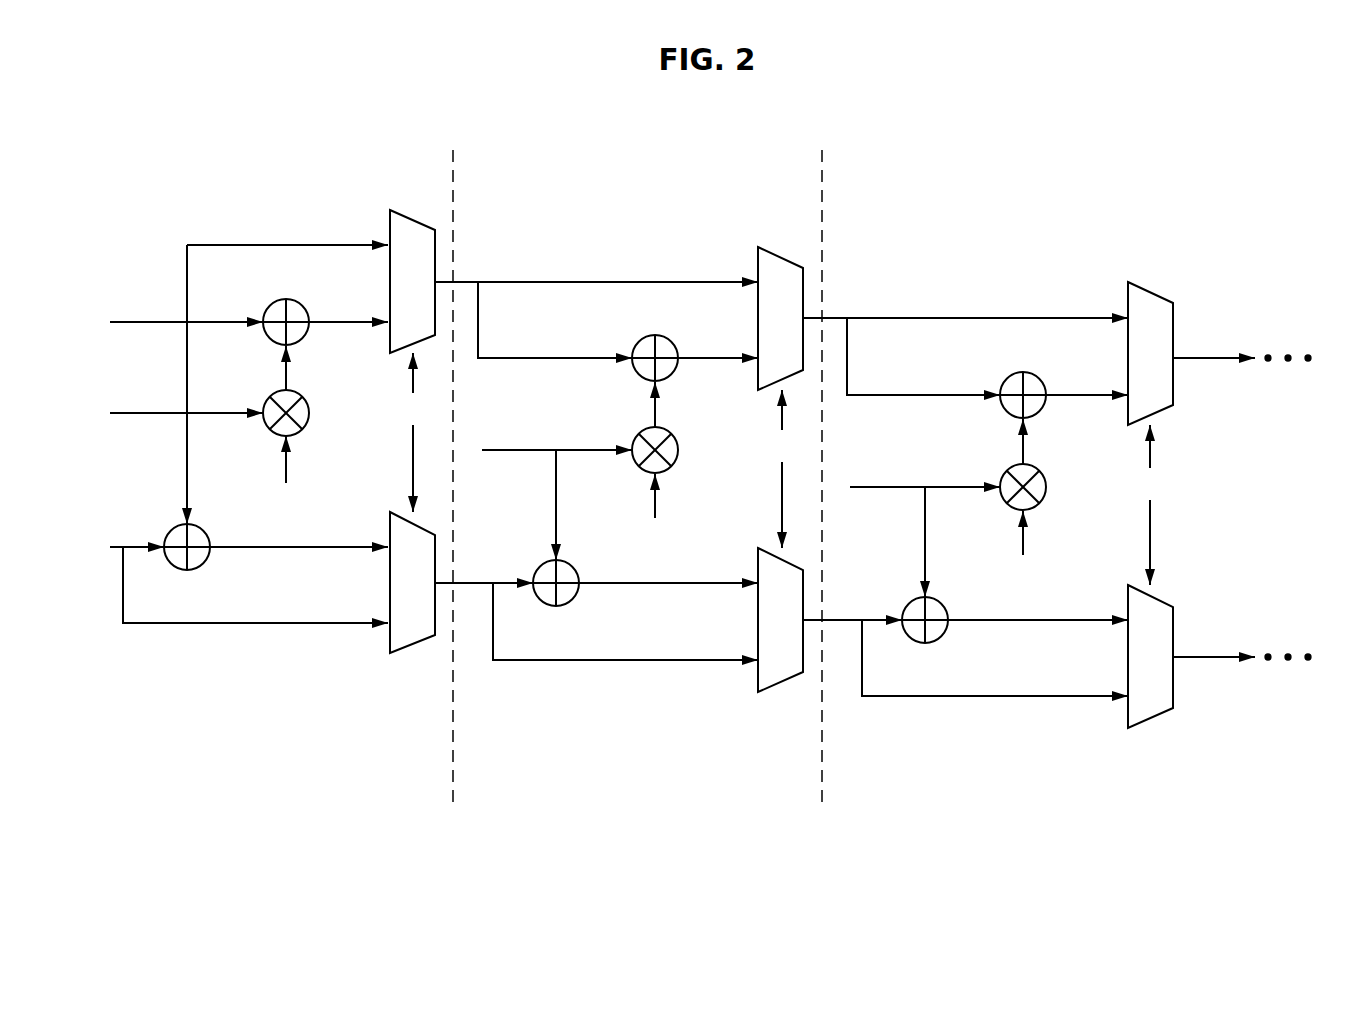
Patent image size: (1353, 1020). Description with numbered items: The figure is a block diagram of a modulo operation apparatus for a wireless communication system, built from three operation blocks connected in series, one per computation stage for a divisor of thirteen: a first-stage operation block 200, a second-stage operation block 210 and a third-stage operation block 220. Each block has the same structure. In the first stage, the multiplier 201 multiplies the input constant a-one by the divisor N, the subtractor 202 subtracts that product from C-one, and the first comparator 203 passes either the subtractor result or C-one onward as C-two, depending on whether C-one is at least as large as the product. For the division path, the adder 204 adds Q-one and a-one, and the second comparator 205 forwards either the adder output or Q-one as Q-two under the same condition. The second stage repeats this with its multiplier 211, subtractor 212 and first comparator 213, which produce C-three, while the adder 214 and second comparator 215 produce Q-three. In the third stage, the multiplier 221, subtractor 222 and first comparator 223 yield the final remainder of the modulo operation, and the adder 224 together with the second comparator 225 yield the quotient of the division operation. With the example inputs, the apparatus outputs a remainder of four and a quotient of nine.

The first-stage operation block 200 is at (262, 154).
The multiplier 201 is at (303, 397).
The subtractor 202 is at (303, 306).
The first comparator 203 is at (410, 219).
The adder 204 is at (206, 532).
The second comparator 205 is at (410, 645).
The second-stage operation block 210 is at (607, 154).
The multiplier 211 is at (673, 434).
The subtractor 212 is at (673, 342).
The first comparator 213 is at (778, 256).
The adder 214 is at (575, 569).
The second comparator 215 is at (780, 683).
The third-stage operation block 220 is at (1009, 154).
The multiplier 221 is at (1041, 471).
The subtractor 222 is at (1041, 379).
The first comparator 223 is at (1147, 293).
The adder 224 is at (945, 604).
The second comparator 225 is at (1147, 720).